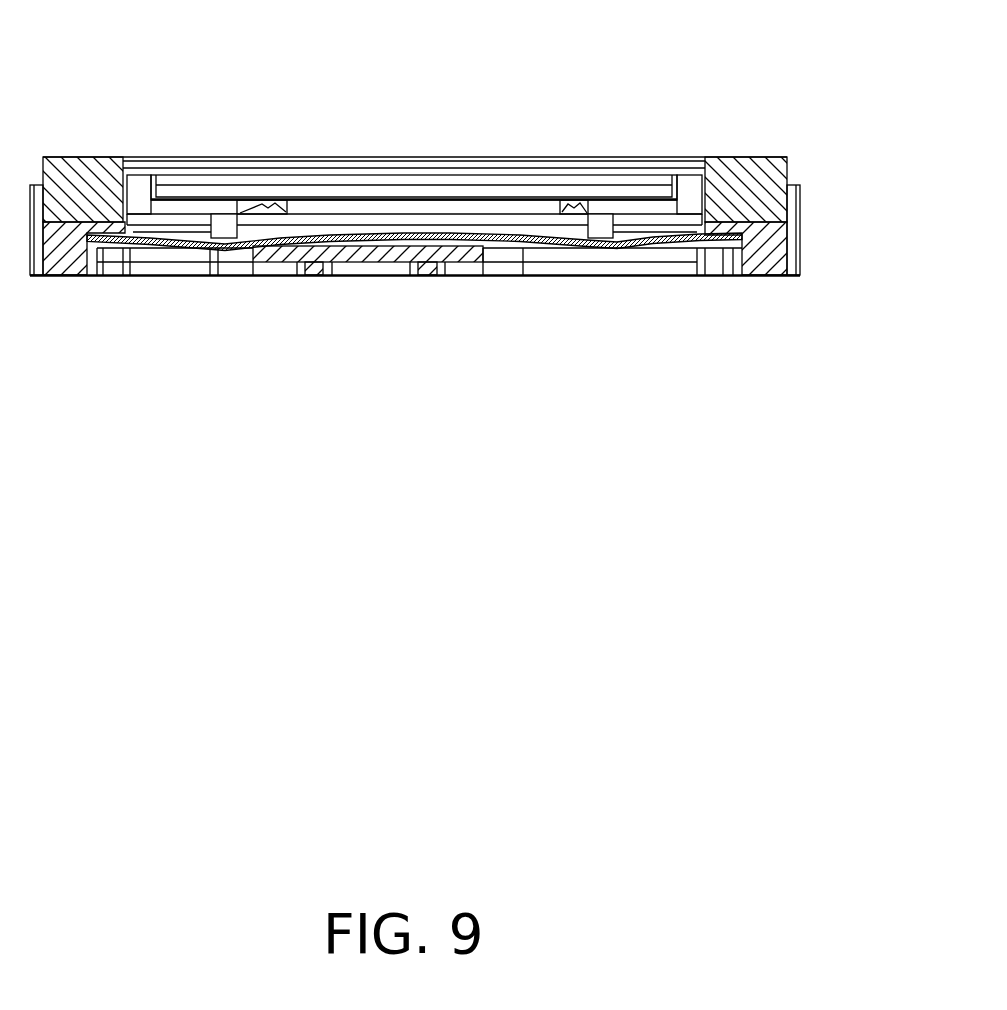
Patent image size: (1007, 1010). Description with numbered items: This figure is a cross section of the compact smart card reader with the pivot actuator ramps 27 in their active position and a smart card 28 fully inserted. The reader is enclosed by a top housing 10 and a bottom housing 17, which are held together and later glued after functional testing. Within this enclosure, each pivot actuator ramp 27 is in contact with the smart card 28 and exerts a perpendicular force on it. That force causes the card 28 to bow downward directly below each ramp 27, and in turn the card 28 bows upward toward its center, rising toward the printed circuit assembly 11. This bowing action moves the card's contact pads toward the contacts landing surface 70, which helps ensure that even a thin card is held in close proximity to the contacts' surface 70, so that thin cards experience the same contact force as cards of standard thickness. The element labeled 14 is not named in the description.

The top housing 10 is at (777, 168).
The printed circuit assembly 11 is at (362, 180).
The optical sheet layer 14 is at (452, 208).
The bottom housing 17 is at (767, 272).
The pivot actuator ramp 27 is at (222, 233).
The smart card 28 is at (192, 243).
The contacts landing surface 70 is at (355, 226).